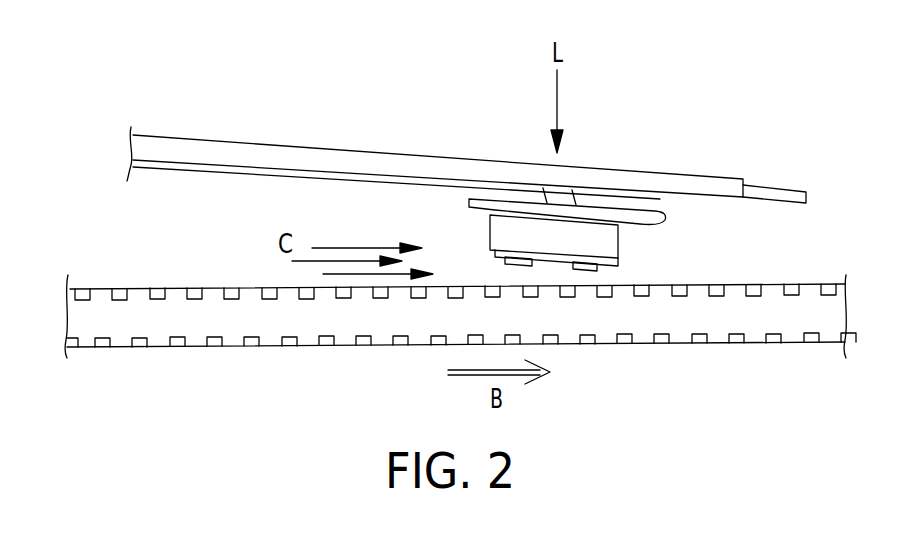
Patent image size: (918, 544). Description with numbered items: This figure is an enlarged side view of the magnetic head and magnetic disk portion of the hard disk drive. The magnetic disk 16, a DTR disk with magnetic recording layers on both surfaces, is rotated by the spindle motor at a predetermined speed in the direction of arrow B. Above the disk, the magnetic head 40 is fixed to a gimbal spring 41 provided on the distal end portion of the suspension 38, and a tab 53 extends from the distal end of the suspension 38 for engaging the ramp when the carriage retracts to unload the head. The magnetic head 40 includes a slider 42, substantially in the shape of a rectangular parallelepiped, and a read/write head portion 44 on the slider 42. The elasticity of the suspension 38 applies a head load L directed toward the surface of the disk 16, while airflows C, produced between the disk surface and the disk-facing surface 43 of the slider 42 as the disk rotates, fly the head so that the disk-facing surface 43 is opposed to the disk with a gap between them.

The magnetic disk 16 is at (272, 337).
The suspension 38 is at (301, 160).
The magnetic head 40 is at (475, 237).
The gimbal spring 41 is at (474, 194).
The slider 42 is at (587, 232).
The disk-facing surface 43 is at (555, 268).
The read/write head portion 44 is at (611, 240).
The tab 53 is at (773, 193).